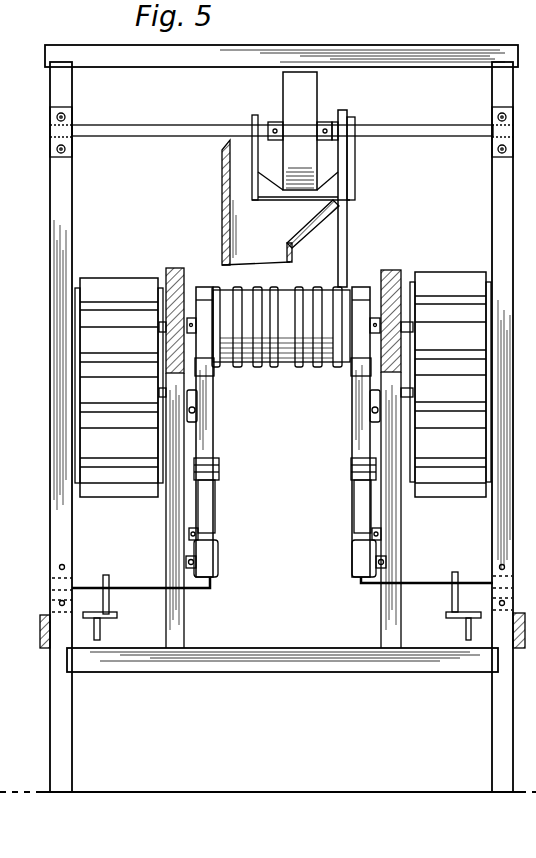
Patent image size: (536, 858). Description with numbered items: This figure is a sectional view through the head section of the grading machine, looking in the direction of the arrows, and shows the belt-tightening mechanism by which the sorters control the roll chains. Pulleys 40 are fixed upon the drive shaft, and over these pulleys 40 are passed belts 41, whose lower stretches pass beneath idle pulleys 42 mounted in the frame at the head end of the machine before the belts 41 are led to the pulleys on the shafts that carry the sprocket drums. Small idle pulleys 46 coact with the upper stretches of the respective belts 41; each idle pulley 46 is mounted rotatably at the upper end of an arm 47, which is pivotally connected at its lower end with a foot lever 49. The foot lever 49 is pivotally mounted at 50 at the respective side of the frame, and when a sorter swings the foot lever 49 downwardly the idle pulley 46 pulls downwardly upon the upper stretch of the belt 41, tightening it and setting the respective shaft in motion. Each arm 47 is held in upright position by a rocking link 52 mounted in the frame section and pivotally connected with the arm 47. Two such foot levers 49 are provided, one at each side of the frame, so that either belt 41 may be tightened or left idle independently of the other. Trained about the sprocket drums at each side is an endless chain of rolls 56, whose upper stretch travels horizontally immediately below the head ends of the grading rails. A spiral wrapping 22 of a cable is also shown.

The spiral wrapping 22 is at (236, 287).
The pulleys 40 is at (203, 283).
The belts 41 is at (202, 364).
The idle pulleys 42 is at (351, 463).
The small idle pulleys 46 is at (370, 411).
The arm 47 is at (352, 507).
The foot lever 49 is at (136, 585).
The pivotal mounting 50 is at (52, 585).
The rocking link 52 is at (203, 533).
The endless chain of rolls 56 is at (115, 290).